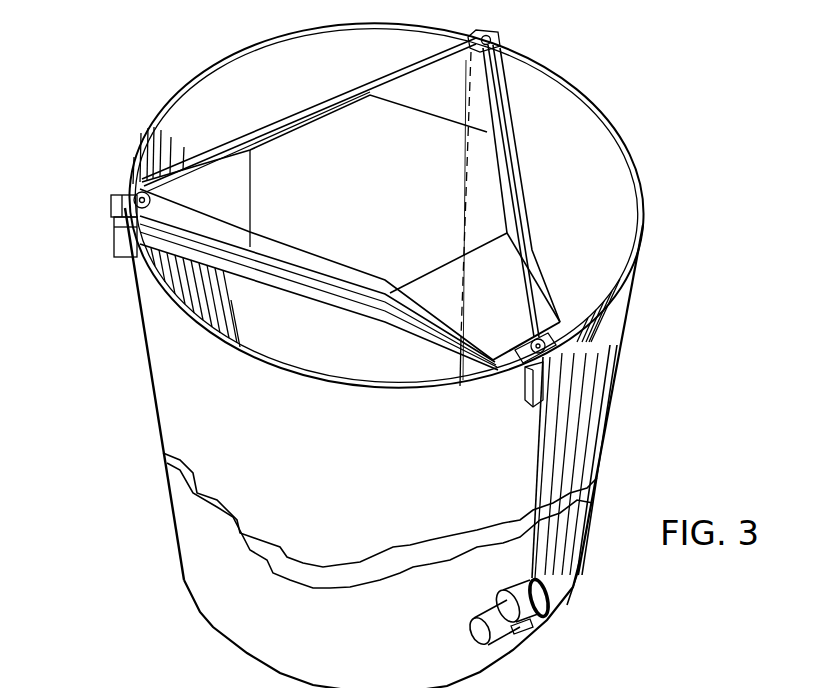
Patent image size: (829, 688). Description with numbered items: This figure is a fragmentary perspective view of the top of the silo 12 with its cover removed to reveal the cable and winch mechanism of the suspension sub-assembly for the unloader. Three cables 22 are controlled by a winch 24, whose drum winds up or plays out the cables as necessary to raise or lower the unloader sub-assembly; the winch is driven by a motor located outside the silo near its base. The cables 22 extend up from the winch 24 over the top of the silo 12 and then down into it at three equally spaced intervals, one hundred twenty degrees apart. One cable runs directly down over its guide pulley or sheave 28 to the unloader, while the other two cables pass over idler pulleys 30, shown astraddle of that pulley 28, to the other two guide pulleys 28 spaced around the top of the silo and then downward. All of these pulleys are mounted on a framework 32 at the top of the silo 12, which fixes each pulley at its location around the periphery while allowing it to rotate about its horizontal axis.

The silo 12 is at (656, 215).
The cables 22 is at (492, 72).
The winch 24 is at (547, 615).
The guide pulley 28 is at (128, 196).
The idler pulleys 30 is at (550, 347).
The framework 32 is at (234, 182).